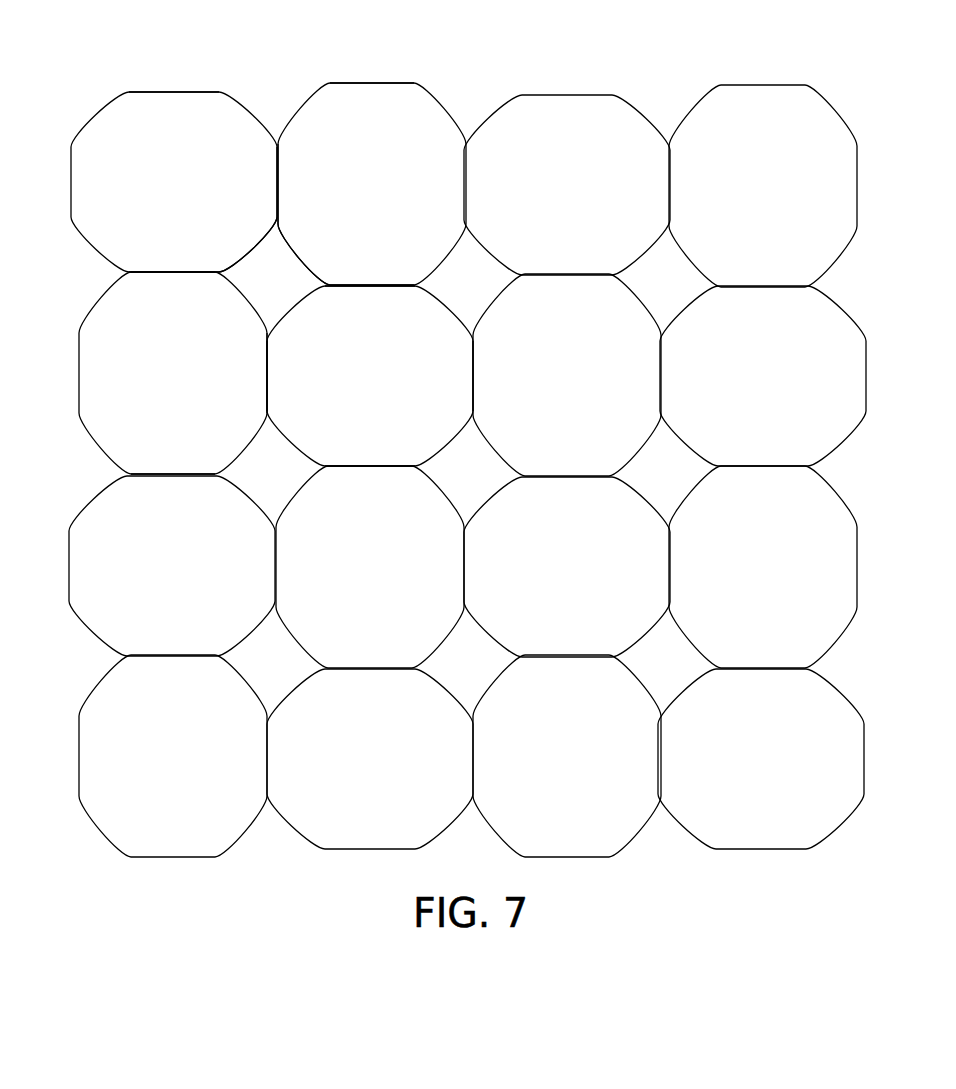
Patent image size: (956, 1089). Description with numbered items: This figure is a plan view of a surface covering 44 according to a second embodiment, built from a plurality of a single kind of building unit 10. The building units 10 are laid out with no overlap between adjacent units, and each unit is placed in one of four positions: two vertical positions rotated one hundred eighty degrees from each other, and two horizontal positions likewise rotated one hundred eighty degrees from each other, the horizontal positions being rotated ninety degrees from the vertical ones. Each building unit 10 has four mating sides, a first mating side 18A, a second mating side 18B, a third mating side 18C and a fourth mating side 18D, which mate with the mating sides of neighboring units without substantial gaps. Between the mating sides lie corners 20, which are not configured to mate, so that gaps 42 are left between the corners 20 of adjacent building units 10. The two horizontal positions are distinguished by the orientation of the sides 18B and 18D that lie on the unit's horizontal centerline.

The surface covering 44 is at (66, 90).
The building unit 10 is at (169, 195).
The gap 42 is at (287, 289).
The first mating side 18A is at (373, 285).
The second mating side 18B is at (172, 93).
The third mating side 18C is at (277, 199).
The fourth mating side 18D is at (175, 270).
The corner 20 is at (250, 262).